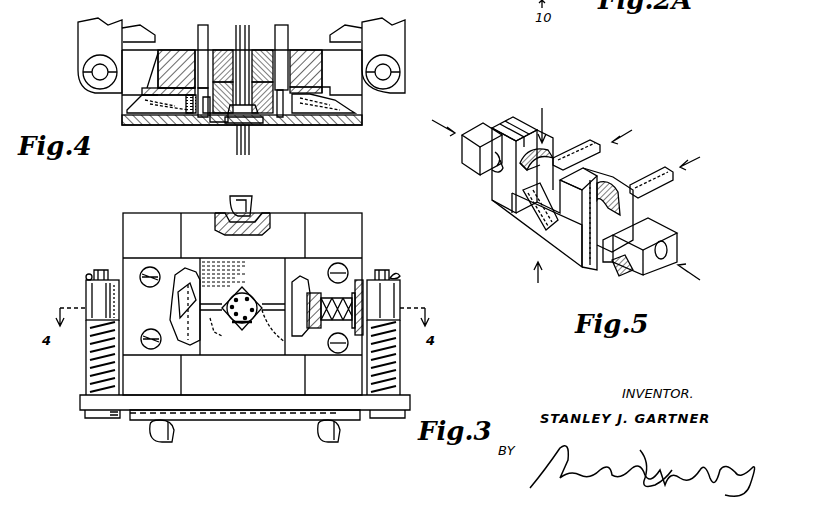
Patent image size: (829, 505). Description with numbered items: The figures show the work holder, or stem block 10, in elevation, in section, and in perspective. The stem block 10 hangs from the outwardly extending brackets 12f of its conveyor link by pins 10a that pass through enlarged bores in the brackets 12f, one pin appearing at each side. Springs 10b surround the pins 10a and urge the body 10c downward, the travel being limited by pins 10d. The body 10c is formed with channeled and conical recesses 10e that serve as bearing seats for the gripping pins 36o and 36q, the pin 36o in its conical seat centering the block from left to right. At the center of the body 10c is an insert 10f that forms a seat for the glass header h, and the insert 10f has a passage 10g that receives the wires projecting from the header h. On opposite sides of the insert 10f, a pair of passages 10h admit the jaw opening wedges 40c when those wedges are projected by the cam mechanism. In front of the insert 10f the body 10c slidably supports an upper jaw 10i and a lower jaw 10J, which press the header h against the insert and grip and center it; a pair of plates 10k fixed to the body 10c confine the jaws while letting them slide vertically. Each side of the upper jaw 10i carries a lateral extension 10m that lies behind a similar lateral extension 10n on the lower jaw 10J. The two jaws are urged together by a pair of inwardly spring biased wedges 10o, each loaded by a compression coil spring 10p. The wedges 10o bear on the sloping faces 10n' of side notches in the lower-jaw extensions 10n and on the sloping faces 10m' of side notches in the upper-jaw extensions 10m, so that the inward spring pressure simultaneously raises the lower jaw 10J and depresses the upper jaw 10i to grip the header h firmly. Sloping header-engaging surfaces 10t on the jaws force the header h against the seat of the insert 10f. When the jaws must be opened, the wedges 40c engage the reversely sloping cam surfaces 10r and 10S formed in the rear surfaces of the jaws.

In FIG. 4, the stem block 10 is at (145, 138).
In FIG. 3, the stem block 10 is at (450, 364).
In FIG. 3, the pins 10a is at (105, 420).
In FIG. 3, the springs 10b is at (90, 374).
In FIG. 4, the body 10c is at (305, 50).
In FIG. 3, the body 10c is at (140, 420).
In FIG. 3, the pins 10d is at (94, 274).
In FIG. 5, the pins 10d is at (470, 160).
In FIG. 3, the channeled and conical recesses 10e is at (222, 218).
In FIG. 4, the central insert 10f is at (232, 48).
In FIG. 4, the passage 10g is at (262, 50).
In FIG. 4, the passages 10h is at (158, 84).
In FIG. 3, the upper jaw 10i is at (276, 290).
In FIG. 5, the upper jaw 10i is at (577, 206).
In FIG. 4, the lower jaw 10J is at (285, 124).
In FIG. 3, the lower jaw 10J is at (268, 352).
In FIG. 5, the lower jaw 10J is at (574, 246).
In FIG. 4, the plates 10k is at (335, 128).
In FIG. 3, the plates 10k is at (158, 330).
In FIG. 4, the lateral extension 10m is at (187, 124).
In FIG. 5, the lateral extension 10m is at (589, 193).
In FIG. 3, the sloping faces 10m' is at (306, 345).
In FIG. 4, the lateral extension 10n is at (198, 145).
In FIG. 3, the lateral extension 10n is at (214, 380).
In FIG. 5, the lateral extension 10n is at (559, 200).
In FIG. 3, the sloping faces 10n' is at (304, 299).
In FIG. 4, the spring biased wedges 10o is at (135, 106).
In FIG. 3, the spring biased wedges 10o is at (172, 300).
In FIG. 5, the spring biased wedges 10o is at (652, 232).
In FIG. 3, the compression coil spring 10p is at (356, 285).
In FIG. 5, the cam surface 10r is at (558, 155).
In FIG. 5, the cam surface 10S is at (550, 160).
In FIG. 4, the sloping header-engaging surfaces 10t is at (218, 124).
In FIG. 5, the sloping header-engaging surfaces 10t is at (528, 228).
In FIG. 4, the brackets 12f is at (78, 44).
In FIG. 3, the brackets 12f is at (86, 296).
In FIG. 3, the gripping pin 36o is at (254, 204).
In FIG. 3, the gripping pin 36q is at (175, 432).
In FIG. 4, the jaw opening wedges 40c is at (198, 40).
In FIG. 3, the jaw opening wedges 40c is at (246, 330).
In FIG. 5, the jaw opening wedges 40c is at (648, 176).
In FIG. 4, the glass header h is at (258, 124).